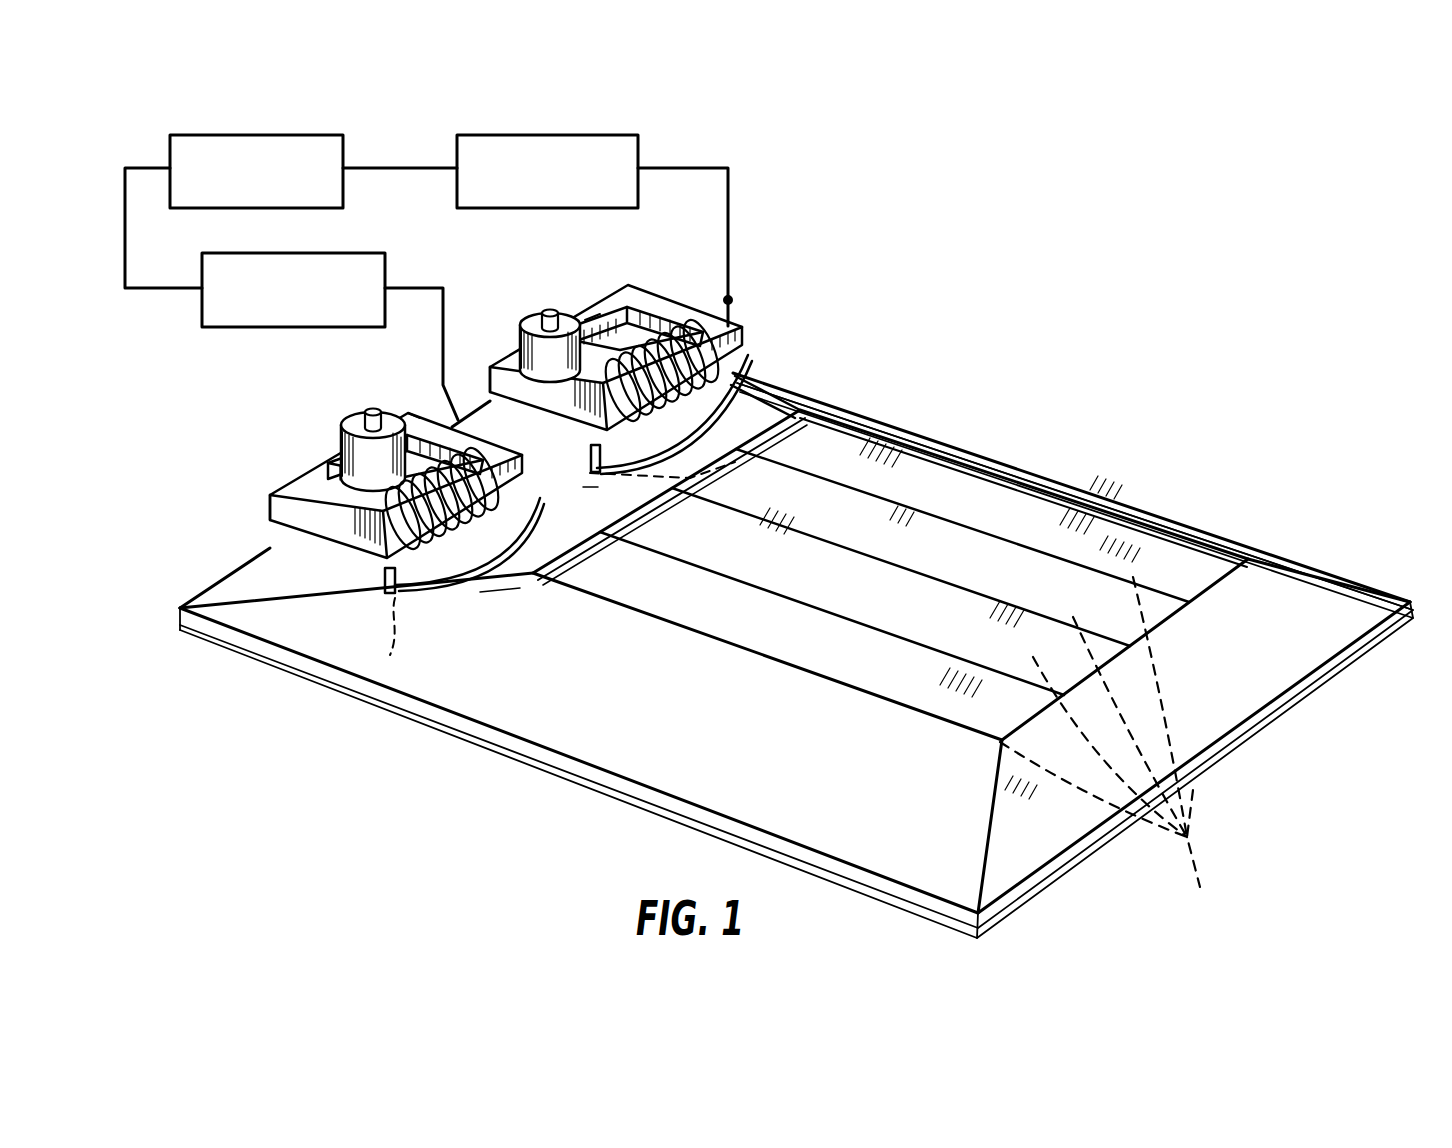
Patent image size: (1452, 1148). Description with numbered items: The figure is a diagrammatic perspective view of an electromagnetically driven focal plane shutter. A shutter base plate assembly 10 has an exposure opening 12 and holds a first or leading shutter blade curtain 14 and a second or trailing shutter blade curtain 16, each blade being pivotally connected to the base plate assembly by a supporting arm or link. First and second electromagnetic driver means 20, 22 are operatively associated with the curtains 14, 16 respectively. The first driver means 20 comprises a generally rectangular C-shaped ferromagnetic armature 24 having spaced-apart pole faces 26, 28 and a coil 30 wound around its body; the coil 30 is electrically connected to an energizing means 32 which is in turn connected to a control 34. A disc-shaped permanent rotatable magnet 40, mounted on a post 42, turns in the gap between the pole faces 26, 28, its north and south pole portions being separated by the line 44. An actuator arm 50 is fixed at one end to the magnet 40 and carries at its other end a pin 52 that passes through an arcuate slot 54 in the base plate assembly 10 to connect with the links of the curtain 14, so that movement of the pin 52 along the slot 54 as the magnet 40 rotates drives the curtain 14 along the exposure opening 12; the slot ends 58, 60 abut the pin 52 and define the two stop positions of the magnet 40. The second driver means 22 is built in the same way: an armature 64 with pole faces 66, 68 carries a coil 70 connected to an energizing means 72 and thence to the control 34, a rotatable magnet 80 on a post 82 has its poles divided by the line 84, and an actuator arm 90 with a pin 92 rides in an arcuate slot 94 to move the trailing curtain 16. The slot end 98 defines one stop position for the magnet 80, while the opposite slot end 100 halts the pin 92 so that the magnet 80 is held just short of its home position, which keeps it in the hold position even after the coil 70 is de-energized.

The shutter base plate assembly 10 is at (1272, 548).
The exposure opening 12 is at (647, 615).
The first shutter blade curtain 14 is at (780, 623).
The second shutter blade curtain 16 is at (1107, 746).
The first electromagnetic driver means 20 is at (637, 334).
The second electromagnetic driver means 22 is at (363, 505).
The armature 24 is at (672, 302).
The pole face 26 is at (488, 366).
The pole face 28 is at (586, 318).
The coil 30 is at (757, 346).
The energizing means 32 is at (525, 135).
The control 34 is at (238, 135).
The rotatable magnet 40 is at (525, 314).
The post 42 is at (552, 310).
The pole-dividing line 44 is at (521, 340).
The actuator arm 50 is at (490, 478).
The pin 52 is at (690, 484).
The arcuate slot 54 is at (762, 426).
The slot end 58 is at (627, 517).
The slot end 60 is at (742, 378).
The armature 64 is at (318, 548).
The pole face 66 is at (328, 484).
The pole face 68 is at (413, 412).
The coil 70 is at (443, 580).
The energizing means 72 is at (300, 253).
The rotatable magnet 80 is at (344, 415).
The post 82 is at (370, 409).
The pole-dividing line 84 is at (342, 436).
The actuator arm 90 is at (382, 590).
The pin 92 is at (387, 638).
The arcuate slot 94 is at (498, 590).
The slot end 98 is at (384, 598).
The slot end 100 is at (583, 488).